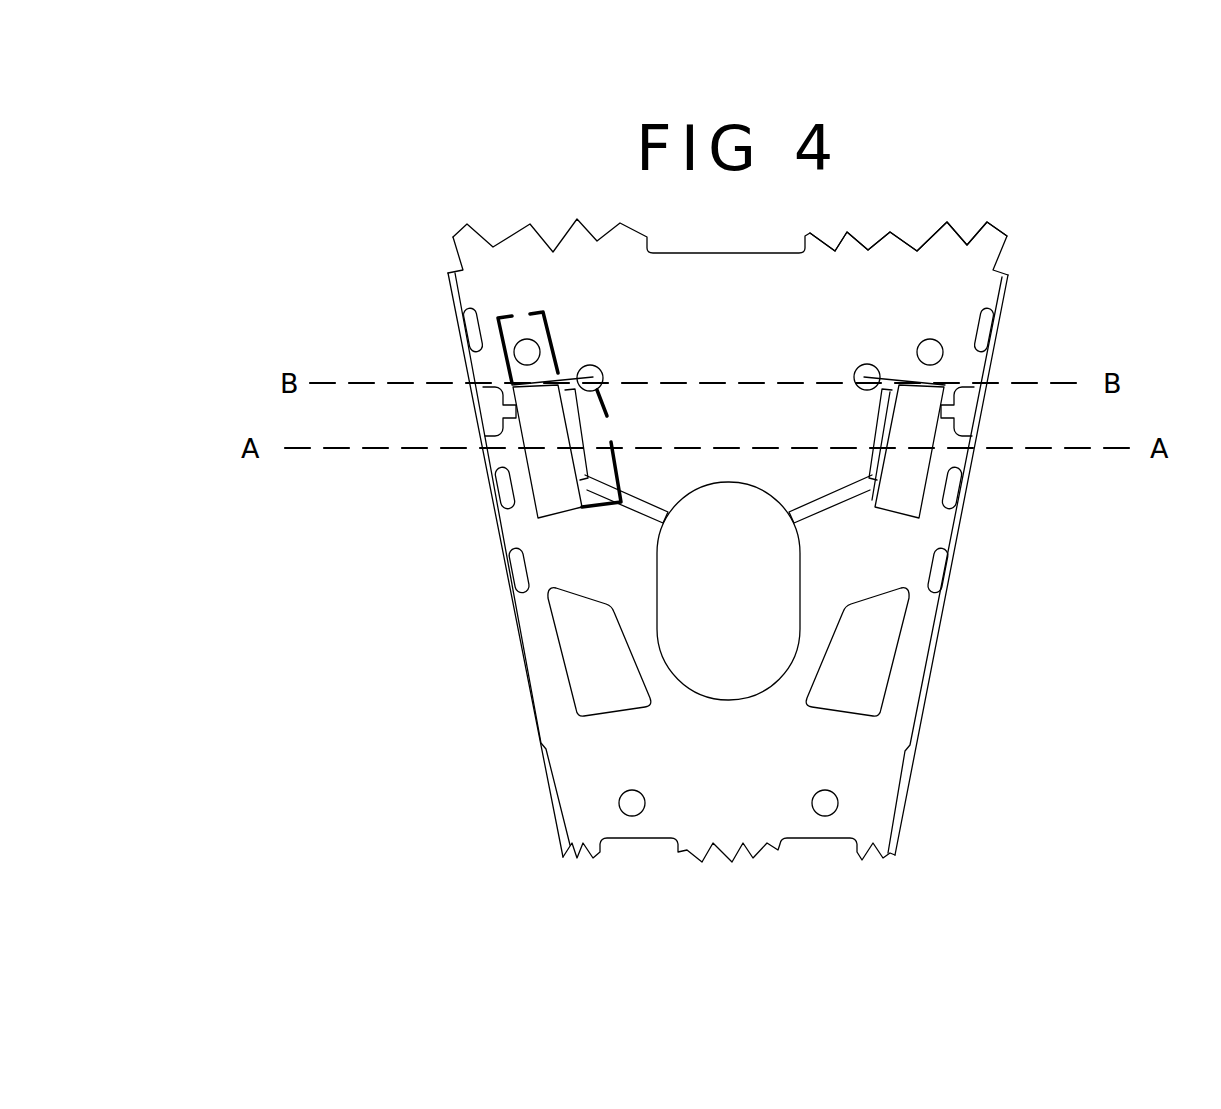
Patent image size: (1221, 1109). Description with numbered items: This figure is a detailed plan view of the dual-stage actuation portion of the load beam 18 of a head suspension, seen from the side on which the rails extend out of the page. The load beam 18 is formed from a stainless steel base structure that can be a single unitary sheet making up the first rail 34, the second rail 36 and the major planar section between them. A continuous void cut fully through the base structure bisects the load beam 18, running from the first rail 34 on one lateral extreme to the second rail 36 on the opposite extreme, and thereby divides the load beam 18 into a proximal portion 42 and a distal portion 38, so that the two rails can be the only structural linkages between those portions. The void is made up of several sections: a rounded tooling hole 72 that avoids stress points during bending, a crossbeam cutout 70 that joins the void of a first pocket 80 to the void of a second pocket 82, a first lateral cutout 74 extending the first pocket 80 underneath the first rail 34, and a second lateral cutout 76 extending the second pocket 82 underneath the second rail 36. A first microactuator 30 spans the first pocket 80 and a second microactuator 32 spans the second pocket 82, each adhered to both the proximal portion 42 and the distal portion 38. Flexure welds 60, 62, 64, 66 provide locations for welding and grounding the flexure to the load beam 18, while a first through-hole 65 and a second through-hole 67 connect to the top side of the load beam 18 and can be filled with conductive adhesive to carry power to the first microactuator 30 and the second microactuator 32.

The load beam 18 is at (530, 214).
The proximal portion 42 is at (867, 277).
The flexure weld 66 is at (590, 365).
The first through-hole 65 is at (515, 353).
The flexure weld 64 is at (872, 364).
The second through-hole 67 is at (943, 353).
The second lateral cutout 76 is at (968, 415).
The first lateral cutout 74 is at (495, 415).
The first pocket 80 is at (517, 446).
The second pocket 82 is at (937, 455).
The first microactuator 30 is at (542, 492).
The second microactuator 32 is at (913, 508).
The crossbeam cutout 70 is at (787, 521).
The first rail 34 is at (507, 572).
The second rail 36 is at (938, 641).
The tooling hole 72 is at (695, 703).
The distal portion 38 is at (770, 742).
The flexure weld 60 is at (838, 803).
The flexure weld 62 is at (617, 803).